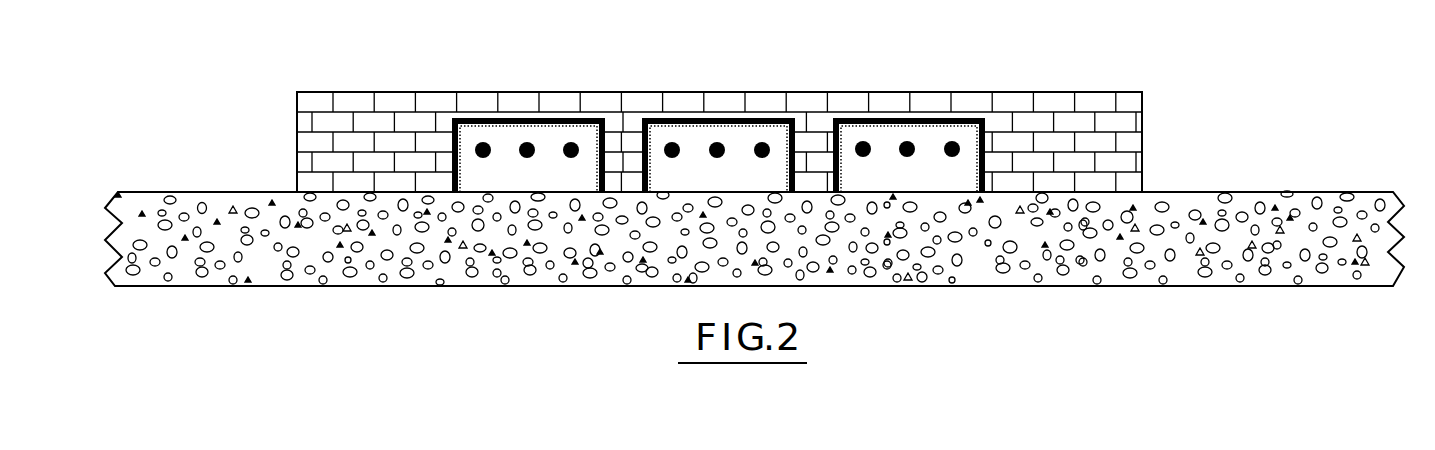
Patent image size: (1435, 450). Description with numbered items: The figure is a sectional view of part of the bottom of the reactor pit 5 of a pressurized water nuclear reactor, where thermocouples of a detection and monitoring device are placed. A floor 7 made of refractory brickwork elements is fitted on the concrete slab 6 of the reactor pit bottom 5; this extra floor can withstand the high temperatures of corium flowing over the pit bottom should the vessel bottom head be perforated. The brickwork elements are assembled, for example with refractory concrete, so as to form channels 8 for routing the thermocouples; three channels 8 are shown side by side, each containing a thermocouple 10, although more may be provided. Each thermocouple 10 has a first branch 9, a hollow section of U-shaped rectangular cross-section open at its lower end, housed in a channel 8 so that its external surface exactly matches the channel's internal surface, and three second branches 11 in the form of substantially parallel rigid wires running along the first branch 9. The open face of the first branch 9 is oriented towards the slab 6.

The reactor pit bottom 5 is at (1218, 172).
The concrete slab 6 is at (1307, 200).
The floor 7 is at (352, 142).
The channel 8 is at (842, 118).
The first branch 9 is at (520, 122).
The thermocouple 10 is at (476, 174).
The second branch 11 is at (483, 159).